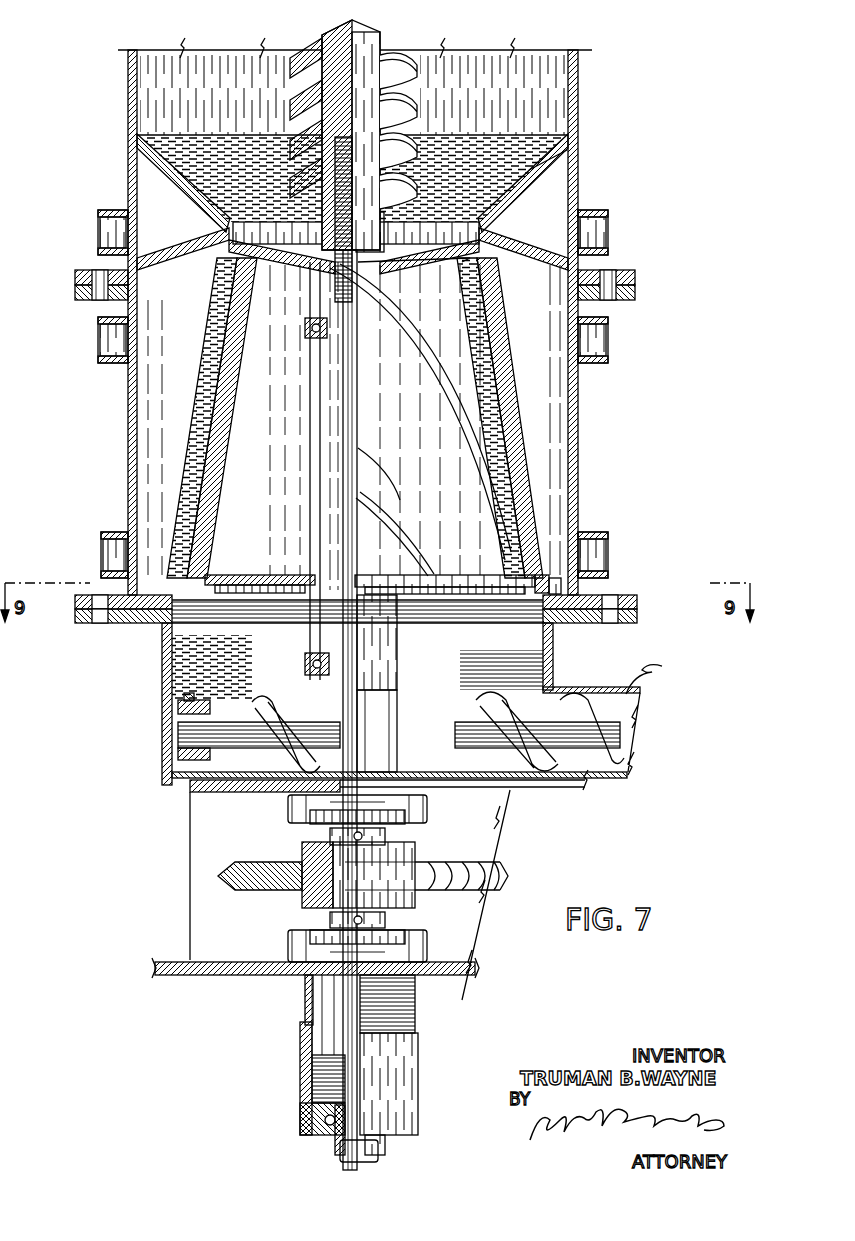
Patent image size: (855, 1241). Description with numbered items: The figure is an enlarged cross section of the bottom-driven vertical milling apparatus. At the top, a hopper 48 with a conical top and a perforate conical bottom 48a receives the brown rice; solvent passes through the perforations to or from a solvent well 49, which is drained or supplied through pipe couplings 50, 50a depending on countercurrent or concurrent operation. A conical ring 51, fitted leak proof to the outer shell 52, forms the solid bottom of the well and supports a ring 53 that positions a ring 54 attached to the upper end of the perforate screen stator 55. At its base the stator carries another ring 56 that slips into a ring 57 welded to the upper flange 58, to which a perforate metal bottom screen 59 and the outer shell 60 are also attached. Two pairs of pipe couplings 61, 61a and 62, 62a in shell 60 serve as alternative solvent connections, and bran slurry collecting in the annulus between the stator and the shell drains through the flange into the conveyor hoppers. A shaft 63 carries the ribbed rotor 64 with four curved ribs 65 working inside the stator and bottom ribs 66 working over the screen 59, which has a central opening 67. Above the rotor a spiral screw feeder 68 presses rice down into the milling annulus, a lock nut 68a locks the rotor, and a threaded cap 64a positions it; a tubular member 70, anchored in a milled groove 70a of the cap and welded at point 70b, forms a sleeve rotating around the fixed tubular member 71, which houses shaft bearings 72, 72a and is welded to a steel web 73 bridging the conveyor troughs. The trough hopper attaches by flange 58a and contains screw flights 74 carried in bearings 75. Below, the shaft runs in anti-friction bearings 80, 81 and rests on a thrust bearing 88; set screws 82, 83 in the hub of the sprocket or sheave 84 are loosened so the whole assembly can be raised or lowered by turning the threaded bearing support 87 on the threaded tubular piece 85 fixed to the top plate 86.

The hopper 48 is at (458, 72).
The perforate conical bottom 48a is at (486, 134).
The solvent well 49 is at (524, 162).
The pipe coupling 50 is at (98, 233).
The pipe coupling 50a is at (608, 232).
The conical ring 51 is at (502, 235).
The outer shell 52 is at (628, 268).
The ring 53 is at (522, 191).
The ring 54 is at (470, 244).
The perforate screen stator 55 is at (523, 458).
The ring 56 is at (555, 572).
The ring 57 is at (569, 577).
The upper flange 58 is at (638, 596).
The flange 58a is at (636, 614).
The perforate metal bottom screen 59 is at (490, 631).
The outer shell 60 is at (578, 408).
The pipe coupling 61 is at (98, 344).
The pipe coupling 61a is at (608, 341).
The pipe coupling 62 is at (102, 562).
The pipe coupling 62a is at (610, 557).
The shaft 63 is at (382, 740).
The ribbed rotor 64 is at (431, 438).
The threaded cap 64a is at (398, 284).
The curved ribs 65 is at (387, 350).
The bottom ribs 66 is at (454, 578).
The opening 67 is at (415, 609).
The spiral screw feeder 68 is at (397, 80).
The lock nut 68a is at (336, 242).
The tubular member 70 is at (318, 482).
The milled groove 70a is at (310, 314).
The weld point 70b is at (300, 574).
The fixed tubular member 71 is at (324, 406).
The shaft bearing 72 is at (310, 654).
The shaft bearing 72a is at (314, 348).
The steel web 73 is at (422, 736).
The screw flights 74 is at (306, 725).
The bearing 75 is at (203, 713).
The anti-friction bearing 80 is at (435, 810).
The anti-friction bearing 81 is at (429, 944).
The set screw 82 is at (330, 828).
The set screw 83 is at (330, 916).
The sprocket or sheave 84 is at (511, 874).
The threaded tubular piece 85 is at (414, 1021).
The top plate 86 is at (449, 974).
The threaded bearing support 87 is at (300, 1083).
The anti-friction thrust bearing 88 is at (337, 1140).